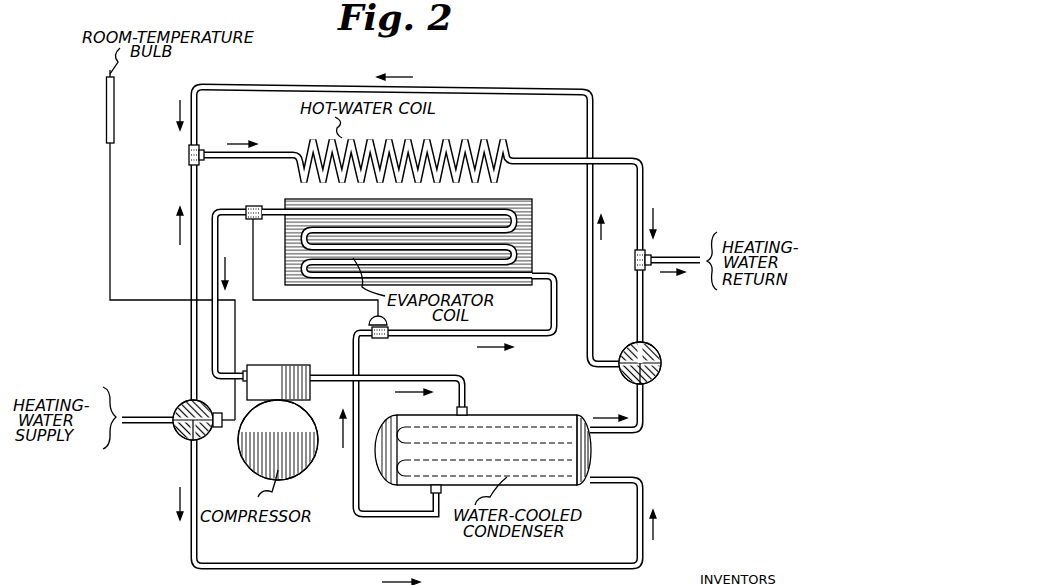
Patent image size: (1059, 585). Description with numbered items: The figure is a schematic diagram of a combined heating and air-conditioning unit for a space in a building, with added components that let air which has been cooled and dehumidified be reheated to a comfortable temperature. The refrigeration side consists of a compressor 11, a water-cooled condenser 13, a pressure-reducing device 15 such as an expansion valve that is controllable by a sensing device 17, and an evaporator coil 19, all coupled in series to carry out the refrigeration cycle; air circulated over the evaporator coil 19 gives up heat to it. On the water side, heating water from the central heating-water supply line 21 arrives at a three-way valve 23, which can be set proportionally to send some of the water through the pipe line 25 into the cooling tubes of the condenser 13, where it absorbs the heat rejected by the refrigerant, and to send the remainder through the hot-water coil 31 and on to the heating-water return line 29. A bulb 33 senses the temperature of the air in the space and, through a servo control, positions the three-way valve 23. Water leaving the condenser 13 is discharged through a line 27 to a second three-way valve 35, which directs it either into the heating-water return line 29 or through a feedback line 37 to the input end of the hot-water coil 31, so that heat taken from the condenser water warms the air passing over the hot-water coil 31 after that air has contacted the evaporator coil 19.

The compressor 11 is at (240, 458).
The water-cooled condenser 13 is at (531, 423).
The pressure-reducing device 15 is at (382, 340).
The sensing device 17 is at (248, 222).
The evaporator coil 19 is at (530, 218).
The central heating-water supply line 21 is at (144, 417).
The 3-way valve 23 is at (178, 435).
The pipe line 25 is at (319, 563).
The line 27 is at (647, 417).
The heating-water return line 29 is at (673, 256).
The hot-water coil 31 is at (300, 173).
The bulb 33 is at (106, 112).
The second 3-way valve 35 is at (662, 362).
The feedback line 37 is at (544, 92).